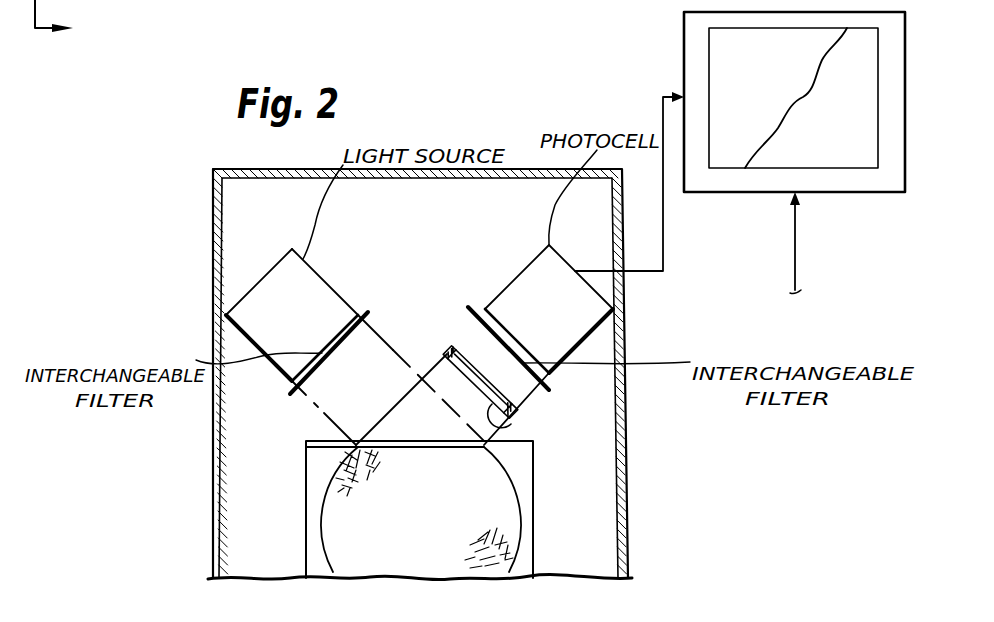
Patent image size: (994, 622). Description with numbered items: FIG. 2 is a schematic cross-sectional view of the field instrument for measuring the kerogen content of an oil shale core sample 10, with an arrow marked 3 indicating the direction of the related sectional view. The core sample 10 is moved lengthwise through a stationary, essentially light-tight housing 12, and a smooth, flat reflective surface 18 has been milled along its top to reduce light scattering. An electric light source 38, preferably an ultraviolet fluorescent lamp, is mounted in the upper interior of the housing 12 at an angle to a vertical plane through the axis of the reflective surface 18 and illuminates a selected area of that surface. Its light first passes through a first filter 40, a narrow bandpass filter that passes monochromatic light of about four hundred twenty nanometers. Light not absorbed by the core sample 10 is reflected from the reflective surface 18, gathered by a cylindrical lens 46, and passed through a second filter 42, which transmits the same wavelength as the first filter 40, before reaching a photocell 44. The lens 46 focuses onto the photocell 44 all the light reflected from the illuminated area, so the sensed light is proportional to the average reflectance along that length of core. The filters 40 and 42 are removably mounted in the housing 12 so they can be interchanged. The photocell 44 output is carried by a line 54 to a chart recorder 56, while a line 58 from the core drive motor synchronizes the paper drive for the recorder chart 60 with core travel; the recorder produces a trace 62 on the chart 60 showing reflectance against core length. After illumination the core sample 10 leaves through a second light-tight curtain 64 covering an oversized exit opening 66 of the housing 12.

The section arrow indicating view of FIG. 3 is at (54, 27).
The core sample 10 is at (502, 500).
The housing 12 is at (626, 403).
The reflective surface 18 is at (405, 443).
The light source 38 is at (308, 292).
The first filter 40 is at (346, 342).
The second filter 42 is at (475, 304).
The photocell 44 is at (549, 254).
The lens 46 is at (506, 423).
The line 54 is at (666, 228).
The chart recorder 56 is at (905, 114).
The line 58 is at (797, 228).
The recorder chart 60 is at (866, 62).
The trace 62 is at (803, 99).
The second light-tight curtain 64 is at (322, 457).
The exit opening 66 is at (530, 470).